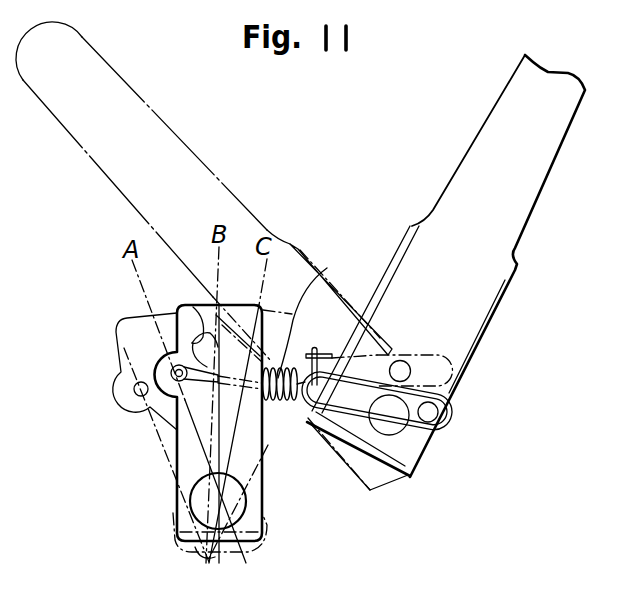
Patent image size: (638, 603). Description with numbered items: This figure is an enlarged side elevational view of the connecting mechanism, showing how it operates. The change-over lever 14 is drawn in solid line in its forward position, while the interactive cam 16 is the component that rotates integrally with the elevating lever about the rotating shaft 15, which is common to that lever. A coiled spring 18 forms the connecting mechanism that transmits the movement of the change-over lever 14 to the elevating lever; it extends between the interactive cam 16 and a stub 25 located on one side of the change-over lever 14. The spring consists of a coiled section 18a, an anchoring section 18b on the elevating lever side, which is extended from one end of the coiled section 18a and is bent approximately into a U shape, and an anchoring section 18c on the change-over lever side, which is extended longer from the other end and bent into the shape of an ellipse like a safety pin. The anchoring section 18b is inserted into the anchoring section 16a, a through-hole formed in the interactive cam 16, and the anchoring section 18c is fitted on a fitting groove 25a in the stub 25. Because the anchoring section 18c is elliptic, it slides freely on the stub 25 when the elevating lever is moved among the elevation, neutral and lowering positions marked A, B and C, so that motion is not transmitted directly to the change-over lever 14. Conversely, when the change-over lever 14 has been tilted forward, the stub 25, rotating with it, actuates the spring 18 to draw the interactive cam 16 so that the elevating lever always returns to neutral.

The change-over lever 14 is at (144, 115).
The rotating shaft 15 is at (197, 507).
The interactive cam 16 is at (183, 328).
The anchoring section (through-hole) 16a is at (172, 366).
The coiled spring 18 is at (296, 426).
The coiled section 18a is at (365, 319).
The anchoring section on the side of the elevating lever 18b is at (197, 395).
The anchoring section on the side of the change-over lever 18c is at (365, 415).
The stub 25 is at (437, 414).
The fitting groove 25a is at (452, 398).